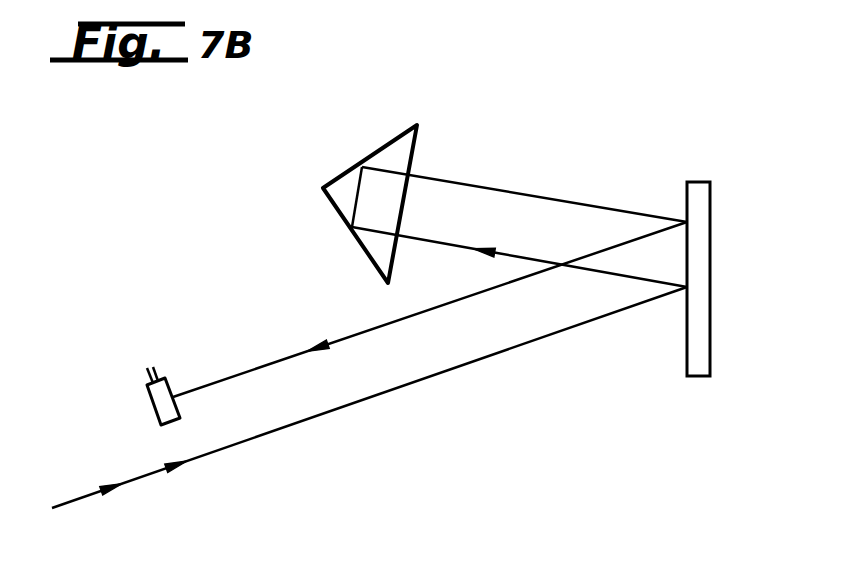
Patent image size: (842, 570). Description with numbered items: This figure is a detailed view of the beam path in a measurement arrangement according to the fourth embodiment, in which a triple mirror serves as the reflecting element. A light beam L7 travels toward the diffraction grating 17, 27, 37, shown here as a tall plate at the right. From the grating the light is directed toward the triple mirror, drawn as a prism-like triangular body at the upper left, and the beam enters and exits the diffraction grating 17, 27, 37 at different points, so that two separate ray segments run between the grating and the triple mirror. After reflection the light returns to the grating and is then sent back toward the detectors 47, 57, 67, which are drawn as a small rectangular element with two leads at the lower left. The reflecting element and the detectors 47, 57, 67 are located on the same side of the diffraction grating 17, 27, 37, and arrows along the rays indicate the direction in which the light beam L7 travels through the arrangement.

The diffraction grating 17 is at (692, 195).
The diffraction grating 27 is at (359, 187).
The diffraction grating 37 is at (393, 157).
The detector 47 is at (209, 368).
The detector 57 is at (209, 368).
The detector 67 is at (163, 390).
The light beam L7 is at (67, 495).